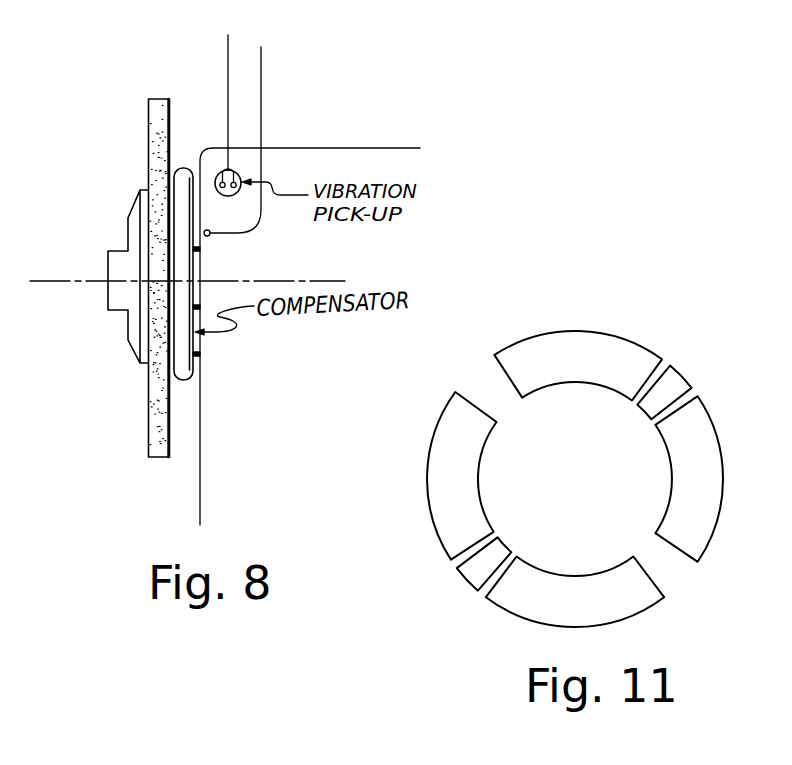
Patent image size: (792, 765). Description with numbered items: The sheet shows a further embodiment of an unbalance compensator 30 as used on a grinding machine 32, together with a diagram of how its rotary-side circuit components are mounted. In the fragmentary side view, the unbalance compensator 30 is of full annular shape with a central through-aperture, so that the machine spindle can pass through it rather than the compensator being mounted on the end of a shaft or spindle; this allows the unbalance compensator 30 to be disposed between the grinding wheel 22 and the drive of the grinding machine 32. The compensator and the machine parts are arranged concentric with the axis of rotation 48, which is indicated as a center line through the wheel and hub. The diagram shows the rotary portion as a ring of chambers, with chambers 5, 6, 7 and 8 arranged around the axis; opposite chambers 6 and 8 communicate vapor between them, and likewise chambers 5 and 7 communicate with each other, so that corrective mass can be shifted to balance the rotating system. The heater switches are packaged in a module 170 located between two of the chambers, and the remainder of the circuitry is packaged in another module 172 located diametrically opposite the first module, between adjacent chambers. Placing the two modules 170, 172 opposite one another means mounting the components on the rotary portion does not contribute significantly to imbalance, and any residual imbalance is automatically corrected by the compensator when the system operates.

In FIG. 8, the grinding wheel 22 is at (158, 99).
In FIG. 8, the unbalance compensator 30 is at (179, 166).
In FIG. 8, the grinding machine 32 is at (286, 148).
In FIG. 8, the axis of rotation 48 is at (77, 283).
In FIG. 11, the chamber 5 is at (438, 422).
In FIG. 11, the chamber 6 is at (618, 338).
In FIG. 11, the chamber 7 is at (724, 453).
In FIG. 11, the chamber 8 is at (577, 574).
In FIG. 11, the module 170 is at (508, 550).
In FIG. 11, the module 172 is at (647, 413).